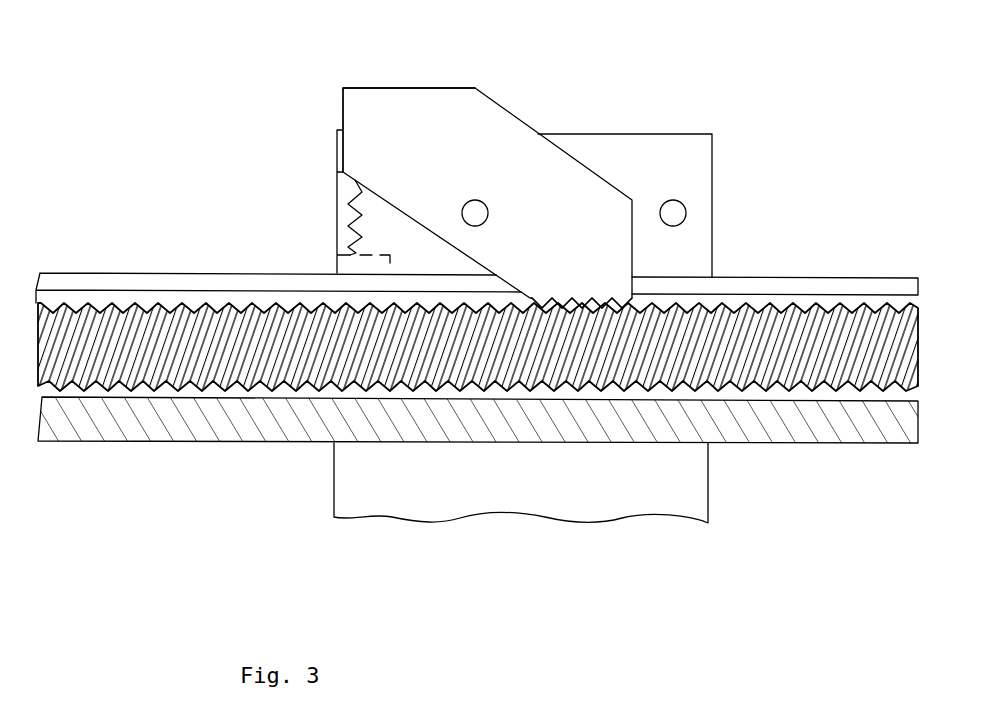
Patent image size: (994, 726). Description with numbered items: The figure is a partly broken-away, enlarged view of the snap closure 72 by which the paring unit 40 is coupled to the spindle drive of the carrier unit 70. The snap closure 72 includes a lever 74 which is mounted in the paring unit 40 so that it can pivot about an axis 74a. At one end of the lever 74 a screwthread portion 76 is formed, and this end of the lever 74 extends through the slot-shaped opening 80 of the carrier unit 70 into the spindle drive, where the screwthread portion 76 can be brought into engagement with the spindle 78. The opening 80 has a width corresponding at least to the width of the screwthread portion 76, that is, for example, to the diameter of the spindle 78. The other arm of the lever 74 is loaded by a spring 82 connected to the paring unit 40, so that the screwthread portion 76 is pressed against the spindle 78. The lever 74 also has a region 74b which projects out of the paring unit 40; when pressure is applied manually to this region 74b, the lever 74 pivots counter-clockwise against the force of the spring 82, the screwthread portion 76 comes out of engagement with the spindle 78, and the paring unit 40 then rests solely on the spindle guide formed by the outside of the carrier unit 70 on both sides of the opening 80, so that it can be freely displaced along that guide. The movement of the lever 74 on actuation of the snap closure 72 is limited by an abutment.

The paring unit 40 is at (392, 518).
The carrier unit 70 is at (771, 444).
The snap closure 72 is at (494, 101).
The lever 74 is at (590, 186).
The axis 74a is at (488, 214).
The region 74b is at (405, 100).
The screwthread portion 76 is at (594, 298).
The spindle 78 is at (203, 313).
The slot-shaped opening 80 is at (865, 292).
The spring 82 is at (350, 197).